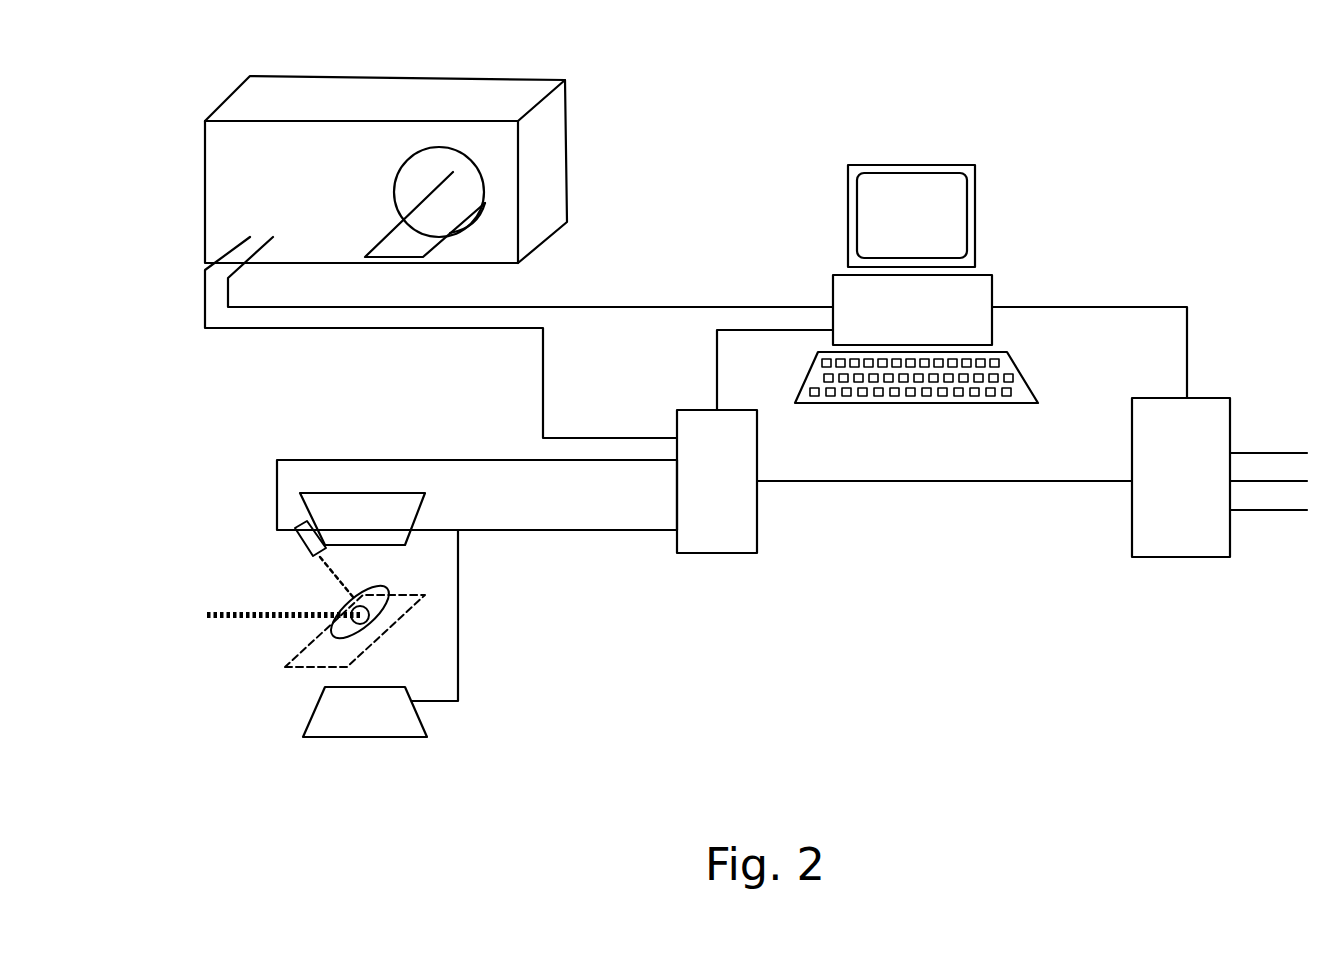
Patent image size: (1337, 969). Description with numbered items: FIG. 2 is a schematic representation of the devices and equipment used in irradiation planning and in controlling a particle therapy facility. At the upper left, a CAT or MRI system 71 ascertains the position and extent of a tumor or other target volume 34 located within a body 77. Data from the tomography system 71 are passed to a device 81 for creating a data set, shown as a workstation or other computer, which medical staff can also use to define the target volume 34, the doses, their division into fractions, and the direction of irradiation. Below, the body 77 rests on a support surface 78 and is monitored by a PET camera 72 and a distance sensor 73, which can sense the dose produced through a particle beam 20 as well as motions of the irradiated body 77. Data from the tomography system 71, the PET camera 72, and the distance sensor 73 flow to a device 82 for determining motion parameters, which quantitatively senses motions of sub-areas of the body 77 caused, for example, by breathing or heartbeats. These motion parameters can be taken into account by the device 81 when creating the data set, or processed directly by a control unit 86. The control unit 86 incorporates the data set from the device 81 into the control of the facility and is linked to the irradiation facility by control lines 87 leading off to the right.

The CAT or MRI system 71 is at (560, 172).
The device for creating a data set 81 is at (975, 295).
The device for determining motion parameters 82 is at (710, 538).
The control unit 86 is at (1213, 558).
The control lines 87 is at (1282, 453).
The PET camera 72 is at (307, 508).
The distance sensor 73 is at (303, 538).
The body 77 is at (373, 603).
The target volume 34 is at (372, 618).
The support surface 78 is at (350, 652).
The particle beam 20 is at (272, 623).